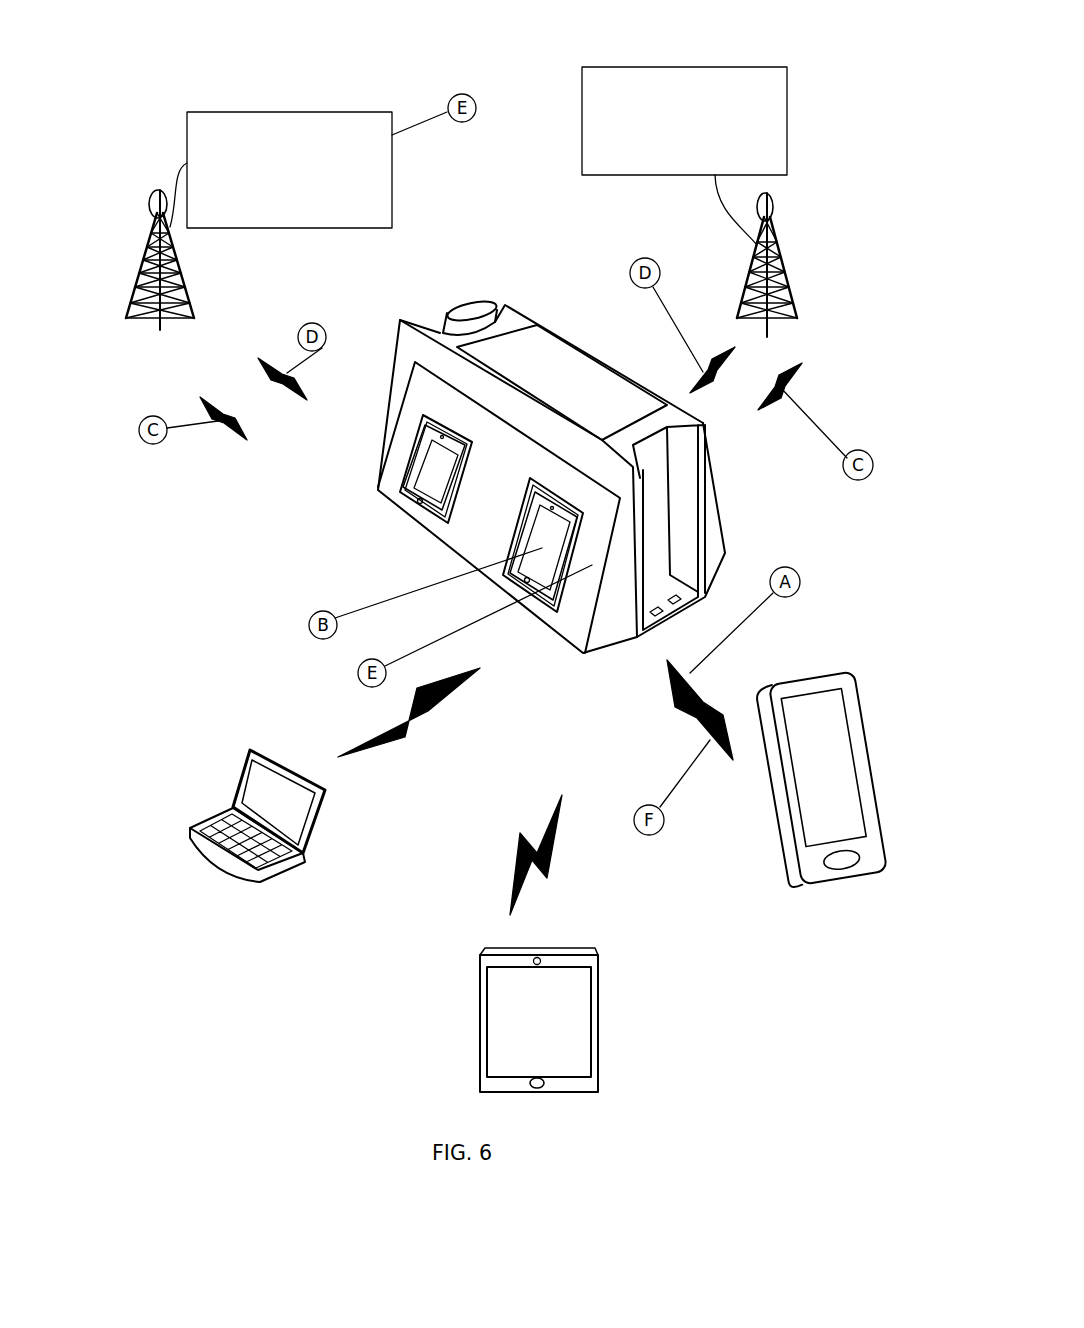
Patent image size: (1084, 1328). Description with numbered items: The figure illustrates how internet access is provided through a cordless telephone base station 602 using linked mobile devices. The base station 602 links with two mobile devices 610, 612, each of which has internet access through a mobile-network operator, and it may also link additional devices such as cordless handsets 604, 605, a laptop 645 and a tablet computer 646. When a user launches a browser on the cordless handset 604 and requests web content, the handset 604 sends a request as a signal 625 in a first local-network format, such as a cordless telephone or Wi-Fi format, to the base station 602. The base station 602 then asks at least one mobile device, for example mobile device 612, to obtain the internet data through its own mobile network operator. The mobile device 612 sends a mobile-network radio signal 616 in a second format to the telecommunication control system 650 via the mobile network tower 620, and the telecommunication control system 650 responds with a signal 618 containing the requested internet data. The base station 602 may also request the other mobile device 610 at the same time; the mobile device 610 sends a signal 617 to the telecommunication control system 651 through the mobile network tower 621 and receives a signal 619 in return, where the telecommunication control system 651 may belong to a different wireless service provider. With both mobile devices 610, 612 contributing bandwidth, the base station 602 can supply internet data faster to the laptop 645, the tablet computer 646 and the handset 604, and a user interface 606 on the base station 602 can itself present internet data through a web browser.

The cordless telephone base station 602 is at (485, 456).
The cordless handset 604 is at (817, 667).
The cordless handset 605 is at (473, 303).
The user interface 606 is at (552, 345).
The mobile device 610 is at (432, 463).
The mobile device 612 is at (510, 540).
The mobile-network radio signal 616 is at (212, 402).
The signal 617 is at (787, 388).
The signal 618 is at (272, 352).
The signal 619 is at (723, 348).
The mobile network tower 620 is at (150, 233).
The mobile network tower 621 is at (793, 268).
The signal 625 is at (687, 715).
The laptop 645 is at (317, 837).
The tablet computer 646 is at (600, 1025).
The telecommunication control system 650 is at (230, 110).
The telecommunication control system 651 is at (627, 63).